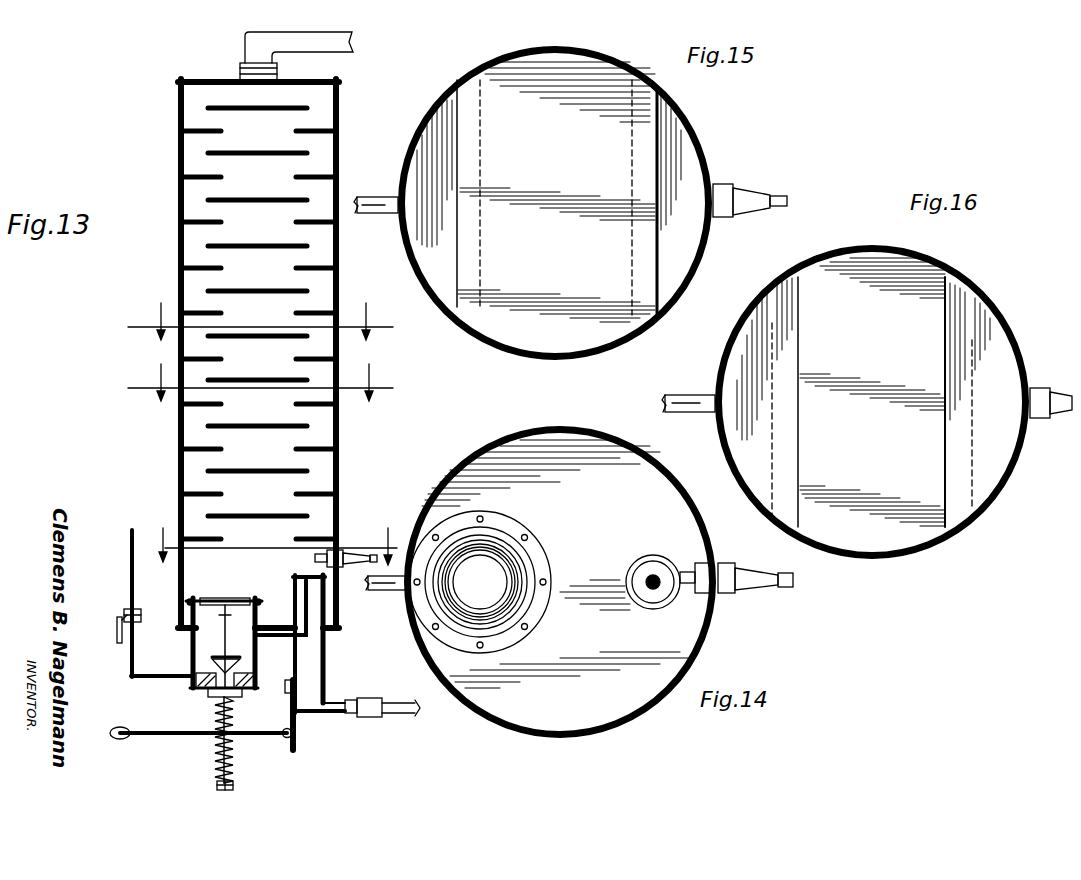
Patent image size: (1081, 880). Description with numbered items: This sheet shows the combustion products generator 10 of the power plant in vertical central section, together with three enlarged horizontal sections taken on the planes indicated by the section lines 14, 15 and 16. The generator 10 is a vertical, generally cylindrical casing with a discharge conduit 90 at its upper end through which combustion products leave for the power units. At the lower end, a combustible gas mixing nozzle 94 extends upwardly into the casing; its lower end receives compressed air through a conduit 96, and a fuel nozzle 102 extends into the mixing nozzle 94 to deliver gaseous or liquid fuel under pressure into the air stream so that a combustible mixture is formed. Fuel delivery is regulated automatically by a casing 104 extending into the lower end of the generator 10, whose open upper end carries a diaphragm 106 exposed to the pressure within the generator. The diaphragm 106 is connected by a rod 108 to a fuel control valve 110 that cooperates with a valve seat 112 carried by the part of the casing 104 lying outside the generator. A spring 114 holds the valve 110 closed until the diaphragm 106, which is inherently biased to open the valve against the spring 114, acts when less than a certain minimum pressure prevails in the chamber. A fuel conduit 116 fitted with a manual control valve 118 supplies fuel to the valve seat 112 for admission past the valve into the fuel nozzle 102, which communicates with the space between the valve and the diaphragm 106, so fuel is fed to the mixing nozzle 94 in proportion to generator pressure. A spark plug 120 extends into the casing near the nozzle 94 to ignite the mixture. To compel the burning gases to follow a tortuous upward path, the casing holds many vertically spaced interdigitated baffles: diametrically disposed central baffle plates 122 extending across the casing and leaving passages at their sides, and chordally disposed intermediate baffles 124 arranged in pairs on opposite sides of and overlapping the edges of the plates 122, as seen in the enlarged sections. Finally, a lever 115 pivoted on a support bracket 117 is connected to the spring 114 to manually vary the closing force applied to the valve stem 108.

In FIG. 13, the combustion products generator 10 is at (176, 137).
In FIG. 14, the combustion products generator 10 is at (588, 432).
In FIG. 15, the combustion products generator 10 is at (703, 156).
In FIG. 16, the combustion products generator 10 is at (991, 311).
In FIG. 13, the section line 14— 14 is at (276, 539).
In FIG. 13, the section line 15— 15 is at (262, 321).
In FIG. 13, the section line 16— 16 is at (263, 382).
In FIG. 13, the discharge conduit 90 is at (327, 42).
In FIG. 13, the combustible gas mixing nozzle 94 is at (295, 590).
In FIG. 14, the combustible gas mixing nozzle 94 is at (652, 556).
In FIG. 13, the compressed air conduit 96 is at (408, 713).
In FIG. 13, the fuel nozzle 102 is at (313, 607).
In FIG. 13, the casing 104 is at (192, 639).
In FIG. 13, the diaphragm 106 is at (205, 598).
In FIG. 14, the diaphragm 106 is at (483, 568).
In FIG. 13, the rod 108 is at (225, 613).
In FIG. 13, the fuel control valve 110 is at (244, 657).
In FIG. 13, the valve seat 112 is at (205, 668).
In FIG. 13, the spring 114 is at (236, 747).
In FIG. 13, the lever 115 is at (185, 740).
In FIG. 13, the fuel conduit 116 is at (130, 553).
In FIG. 13, the support bracket 117 is at (297, 735).
In FIG. 13, the manual control valve 118 is at (125, 609).
In FIG. 13, the spark plug 120 is at (353, 552).
In FIG. 14, the spark plug 120 is at (757, 590).
In FIG. 15, the spark plug 120 is at (757, 206).
In FIG. 16, the spark plug 120 is at (1062, 407).
In FIG. 13, the baffle plates 122 is at (245, 250).
In FIG. 15, the baffle plates 122 is at (502, 303).
In FIG. 16, the baffle plates 122 is at (887, 530).
In FIG. 13, the intermediate baffles 124 is at (196, 407).
In FIG. 15, the intermediate baffles 124 is at (435, 146).
In FIG. 16, the intermediate baffles 124 is at (758, 347).